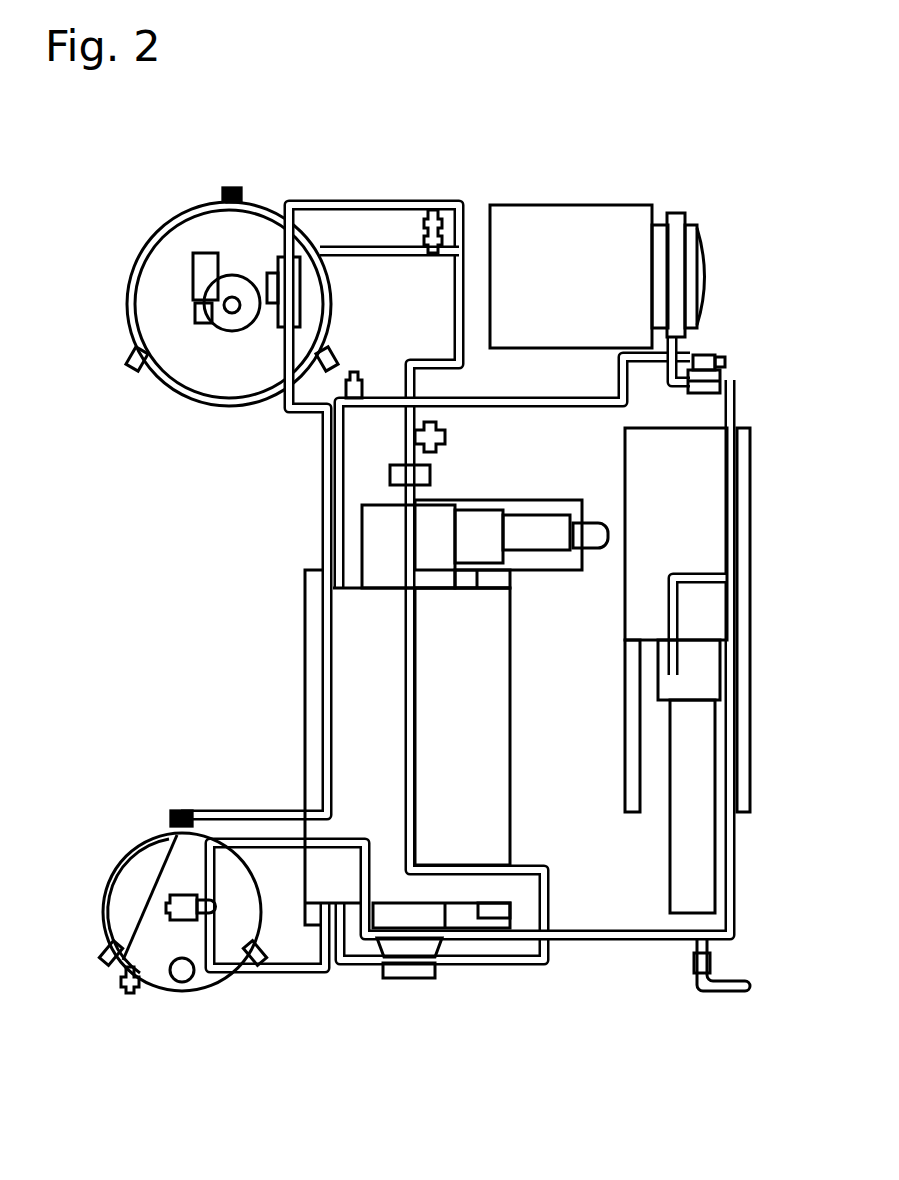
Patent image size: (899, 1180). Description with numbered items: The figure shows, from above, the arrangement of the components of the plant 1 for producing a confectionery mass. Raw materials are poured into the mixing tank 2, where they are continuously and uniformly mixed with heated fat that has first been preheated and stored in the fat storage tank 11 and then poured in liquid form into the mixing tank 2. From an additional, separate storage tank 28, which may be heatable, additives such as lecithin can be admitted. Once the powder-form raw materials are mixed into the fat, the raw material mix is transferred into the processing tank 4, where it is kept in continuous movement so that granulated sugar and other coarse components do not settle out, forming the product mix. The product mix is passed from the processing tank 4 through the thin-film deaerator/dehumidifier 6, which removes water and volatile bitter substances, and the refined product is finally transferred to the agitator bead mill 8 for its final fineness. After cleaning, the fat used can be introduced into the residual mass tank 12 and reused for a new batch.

The plant 1 is at (195, 622).
The mixing tank 2 is at (214, 381).
The processing tank 4 is at (448, 729).
The thin-film deaerator/dehumidifier 6 is at (561, 297).
The agitator bead mill 8 is at (675, 533).
The fat storage tank 11 is at (133, 897).
The residual mass tank 12 is at (177, 955).
The storage tank 28 is at (230, 296).